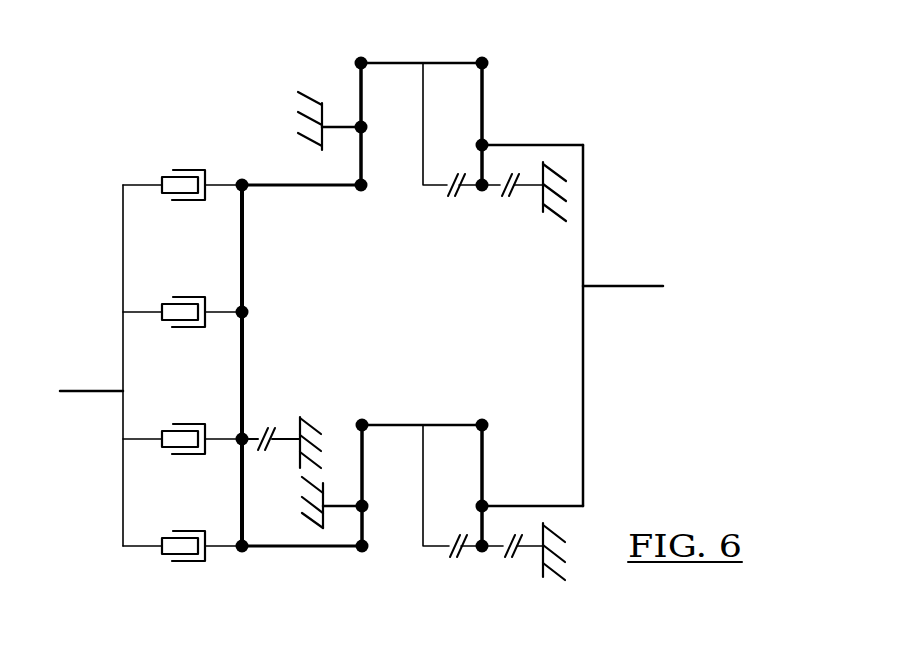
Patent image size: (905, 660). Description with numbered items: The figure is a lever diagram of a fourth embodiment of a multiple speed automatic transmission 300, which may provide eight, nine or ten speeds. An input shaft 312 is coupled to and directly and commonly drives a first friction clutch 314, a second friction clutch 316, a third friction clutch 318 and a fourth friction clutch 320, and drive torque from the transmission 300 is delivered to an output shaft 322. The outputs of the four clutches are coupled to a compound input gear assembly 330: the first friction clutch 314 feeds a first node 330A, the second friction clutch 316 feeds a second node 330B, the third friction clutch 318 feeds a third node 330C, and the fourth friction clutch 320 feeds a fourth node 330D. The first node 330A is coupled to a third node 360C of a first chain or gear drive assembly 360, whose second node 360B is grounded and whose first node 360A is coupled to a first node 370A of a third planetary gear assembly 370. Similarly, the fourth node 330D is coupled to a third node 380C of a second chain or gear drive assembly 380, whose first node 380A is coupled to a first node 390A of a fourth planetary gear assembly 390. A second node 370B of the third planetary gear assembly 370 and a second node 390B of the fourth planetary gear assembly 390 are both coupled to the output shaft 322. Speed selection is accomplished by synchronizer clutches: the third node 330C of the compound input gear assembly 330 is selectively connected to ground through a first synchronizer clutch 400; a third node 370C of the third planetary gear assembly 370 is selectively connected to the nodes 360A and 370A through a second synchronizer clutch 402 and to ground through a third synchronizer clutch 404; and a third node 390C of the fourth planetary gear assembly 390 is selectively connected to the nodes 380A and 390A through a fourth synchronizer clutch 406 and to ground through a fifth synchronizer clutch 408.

The multiple speed automatic transmission 300 is at (667, 124).
The input shaft 312 is at (77, 396).
The first friction clutch 314 is at (175, 180).
The second friction clutch 316 is at (175, 307).
The third friction clutch 318 is at (175, 448).
The fourth friction clutch 320 is at (175, 555).
The output shaft 322 is at (645, 288).
The compound input gear assembly 330 is at (227, 146).
The first node of the compound input gear assembly 330A is at (244, 188).
The second node of the compound input gear assembly 330B is at (244, 315).
The third node of the compound input gear assembly 330C is at (240, 436).
The fourth node of the compound input gear assembly 330D is at (242, 550).
The first chain or gear drive assembly 360 is at (331, 49).
The first node of the first chain or gear drive assembly 360A is at (359, 64).
The second node of the first chain or gear drive assembly 360B is at (356, 133).
The third node of the first chain or gear drive assembly 360C is at (361, 189).
The third planetary gear assembly 370 is at (506, 49).
The first node of the third planetary gear assembly 370A is at (484, 64).
The second node of the third planetary gear assembly 370B is at (484, 144).
The third node of the third planetary gear assembly 370C is at (482, 189).
The second chain or gear drive assembly 380 is at (377, 386).
The first node of the second chain or gear drive assembly 380A is at (364, 423).
The third node of the second chain or gear drive assembly 380C is at (362, 550).
The fourth planetary gear assembly 390 is at (492, 386).
The first node of the fourth planetary gear assembly 390A is at (484, 423).
The second node of the fourth planetary gear assembly 390B is at (485, 506).
The third node of the fourth planetary gear assembly 390C is at (482, 550).
The first synchronizer clutch 400 is at (272, 426).
The second synchronizer clutch 402 is at (445, 191).
The third synchronizer clutch 404 is at (511, 191).
The fourth synchronizer clutch 406 is at (447, 549).
The fifth synchronizer clutch 408 is at (518, 551).